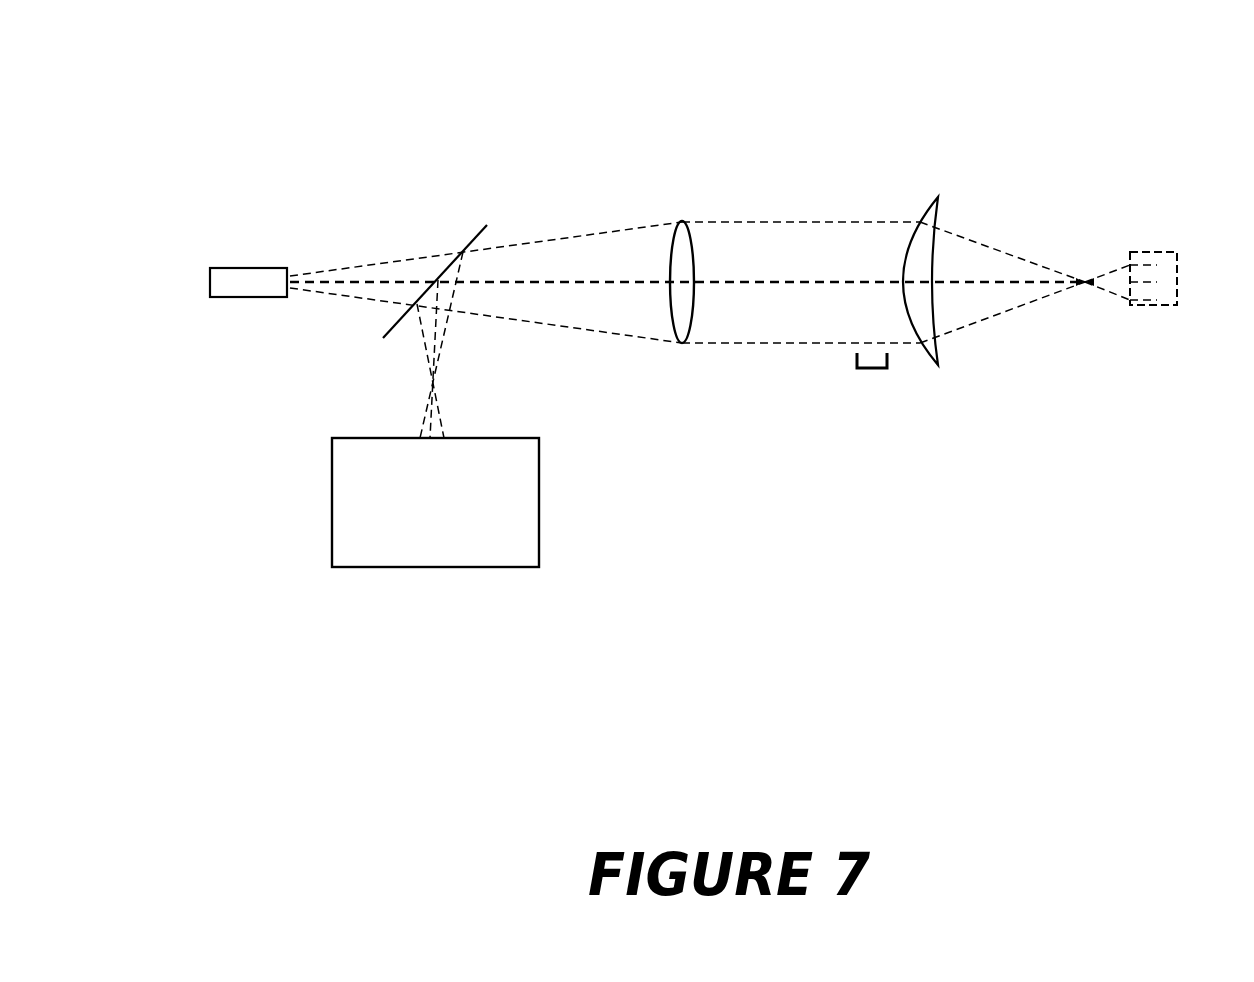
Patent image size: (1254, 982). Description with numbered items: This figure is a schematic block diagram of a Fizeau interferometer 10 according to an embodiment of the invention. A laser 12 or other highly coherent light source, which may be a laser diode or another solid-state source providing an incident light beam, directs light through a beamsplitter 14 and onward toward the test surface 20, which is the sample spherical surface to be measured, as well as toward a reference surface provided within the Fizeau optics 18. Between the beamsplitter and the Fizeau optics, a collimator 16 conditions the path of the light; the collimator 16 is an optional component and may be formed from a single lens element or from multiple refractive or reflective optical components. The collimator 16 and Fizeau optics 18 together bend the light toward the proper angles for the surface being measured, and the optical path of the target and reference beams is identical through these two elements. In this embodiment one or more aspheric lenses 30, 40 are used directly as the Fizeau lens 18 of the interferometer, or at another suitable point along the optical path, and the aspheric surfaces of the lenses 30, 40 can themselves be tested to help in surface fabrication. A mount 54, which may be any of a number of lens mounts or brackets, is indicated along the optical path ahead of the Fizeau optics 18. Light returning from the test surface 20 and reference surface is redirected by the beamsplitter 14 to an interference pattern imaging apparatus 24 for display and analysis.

The Fizeau interferometer 10 is at (286, 52).
The laser 12 is at (248, 315).
The beamsplitter 14 is at (483, 226).
The collimator 16 is at (680, 221).
The Fizeau optics 18 is at (950, 292).
The test surface 20 is at (1158, 252).
The interference pattern imaging apparatus 24 is at (539, 470).
The aspheric lens 30 is at (957, 326).
The aspheric lens 40 is at (952, 326).
The mount 54 is at (855, 368).